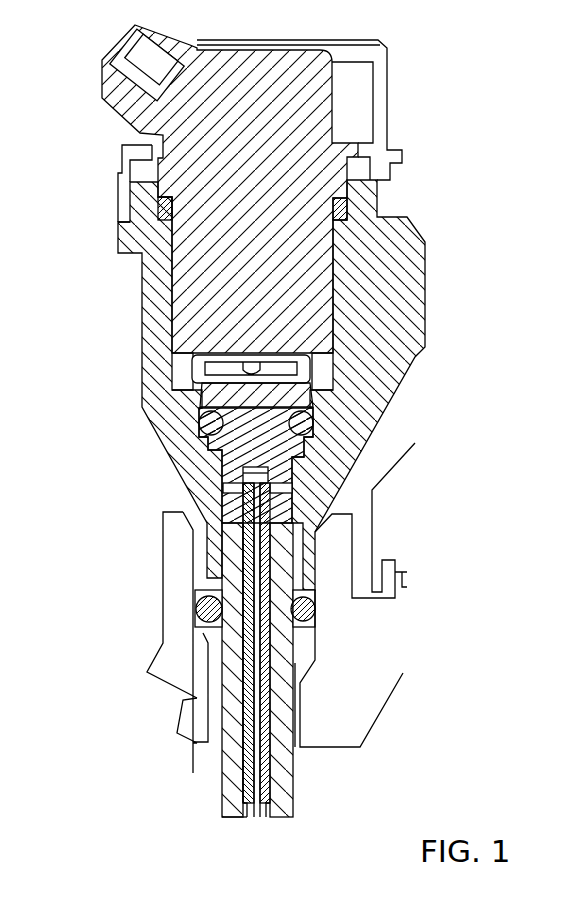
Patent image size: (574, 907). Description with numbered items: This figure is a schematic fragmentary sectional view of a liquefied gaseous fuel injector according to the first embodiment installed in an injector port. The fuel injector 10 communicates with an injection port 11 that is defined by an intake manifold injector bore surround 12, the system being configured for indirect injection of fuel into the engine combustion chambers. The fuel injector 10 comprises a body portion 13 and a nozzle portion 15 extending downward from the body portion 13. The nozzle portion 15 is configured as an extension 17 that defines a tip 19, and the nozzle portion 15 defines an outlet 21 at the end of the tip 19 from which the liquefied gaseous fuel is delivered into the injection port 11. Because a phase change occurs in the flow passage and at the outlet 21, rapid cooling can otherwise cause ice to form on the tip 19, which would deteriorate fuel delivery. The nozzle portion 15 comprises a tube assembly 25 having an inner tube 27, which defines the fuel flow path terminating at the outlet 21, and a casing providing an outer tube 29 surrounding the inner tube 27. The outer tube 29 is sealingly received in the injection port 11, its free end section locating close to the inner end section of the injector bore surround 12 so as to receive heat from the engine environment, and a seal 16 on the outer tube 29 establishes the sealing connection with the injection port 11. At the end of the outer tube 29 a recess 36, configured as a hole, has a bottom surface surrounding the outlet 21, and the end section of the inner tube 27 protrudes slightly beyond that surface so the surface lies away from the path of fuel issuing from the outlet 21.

The fuel injector 10 is at (332, 92).
The injection port 11 is at (192, 740).
The intake manifold injector bore surround 12 is at (177, 658).
The body portion 13 is at (180, 307).
The nozzle portion 15 is at (218, 758).
The seal 16 is at (315, 600).
The extension 17 is at (300, 712).
The tip 19 is at (283, 760).
The outlet 21 is at (255, 820).
The tube assembly 25 is at (300, 660).
The inner tube 27 is at (245, 790).
The outer tube 29 is at (227, 808).
The recess 36 is at (268, 820).